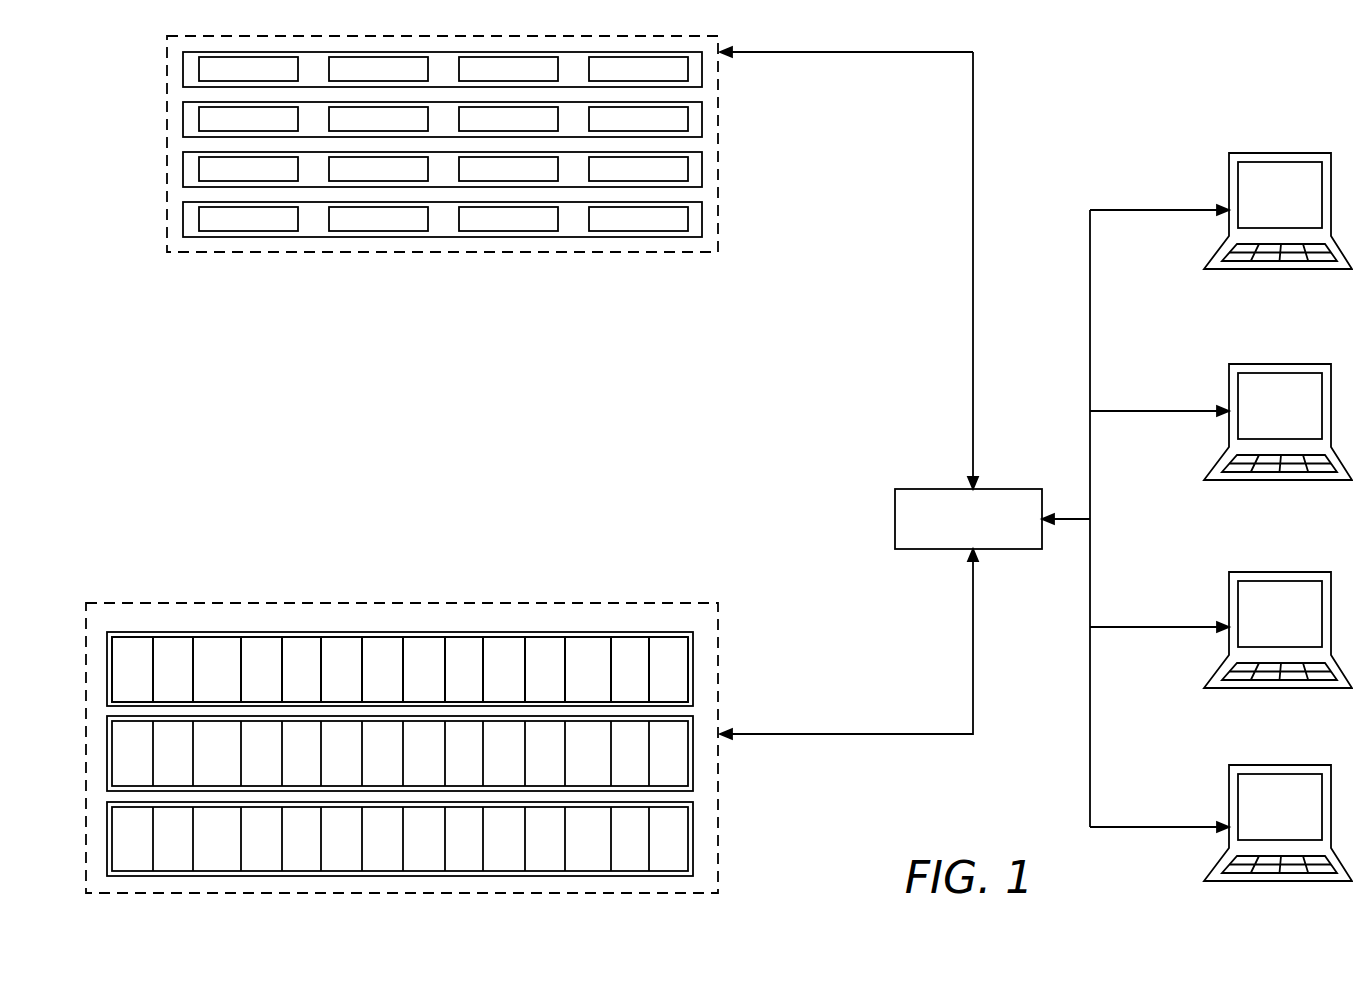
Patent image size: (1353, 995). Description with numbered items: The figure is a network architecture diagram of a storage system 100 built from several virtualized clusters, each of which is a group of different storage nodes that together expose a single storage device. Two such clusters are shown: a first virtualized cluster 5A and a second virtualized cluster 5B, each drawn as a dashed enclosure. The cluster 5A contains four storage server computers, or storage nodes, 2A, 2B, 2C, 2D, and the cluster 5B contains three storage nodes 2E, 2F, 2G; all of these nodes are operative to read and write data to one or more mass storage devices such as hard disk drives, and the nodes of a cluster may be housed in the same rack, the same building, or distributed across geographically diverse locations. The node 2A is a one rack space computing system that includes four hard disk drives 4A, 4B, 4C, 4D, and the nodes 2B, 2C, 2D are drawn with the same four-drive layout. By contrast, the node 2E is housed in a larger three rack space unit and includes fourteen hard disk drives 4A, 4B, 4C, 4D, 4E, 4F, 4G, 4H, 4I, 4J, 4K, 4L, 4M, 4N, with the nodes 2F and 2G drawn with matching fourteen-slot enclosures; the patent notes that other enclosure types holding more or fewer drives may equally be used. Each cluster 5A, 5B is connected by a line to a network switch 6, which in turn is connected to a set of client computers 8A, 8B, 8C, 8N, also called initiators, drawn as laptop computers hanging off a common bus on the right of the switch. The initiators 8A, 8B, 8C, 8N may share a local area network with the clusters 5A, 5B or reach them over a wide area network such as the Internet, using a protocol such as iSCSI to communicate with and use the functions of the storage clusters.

The storage system 100 is at (1060, 57).
The virtualized cluster 5A is at (452, 358).
The virtualized cluster 5B is at (435, 737).
The storage server computer 2A is at (451, 377).
The storage server computer 2B is at (702, 119).
The storage server computer 2C is at (702, 169).
The storage server computer 2D is at (702, 219).
The storage server computer 2E is at (444, 669).
The storage server computer 2F is at (693, 764).
The storage server computer 2G is at (693, 838).
The hard disk drive 4A is at (236, 79).
The hard disk drive 4B is at (366, 79).
The hard disk drive 4C is at (496, 79).
The hard disk drive 4D is at (626, 79).
The hard disk drive 4E is at (290, 681).
The hard disk drive 4F is at (330, 681).
The hard disk drive 4G is at (370, 681).
The hard disk drive 4H is at (411, 681).
The hard disk drive 4I is at (455, 681).
The hard disk drive 4J is at (493, 681).
The hard disk drive 4K is at (533, 681).
The hard disk drive 4L is at (577, 681).
The hard disk drive 4M is at (617, 681).
The hard disk drive 4N is at (656, 681).
The network switch 6 is at (968, 508).
The client computer 8A is at (1278, 200).
The client computer 8B is at (1278, 411).
The client computer 8C is at (1278, 619).
The client computer 8N is at (1278, 812).